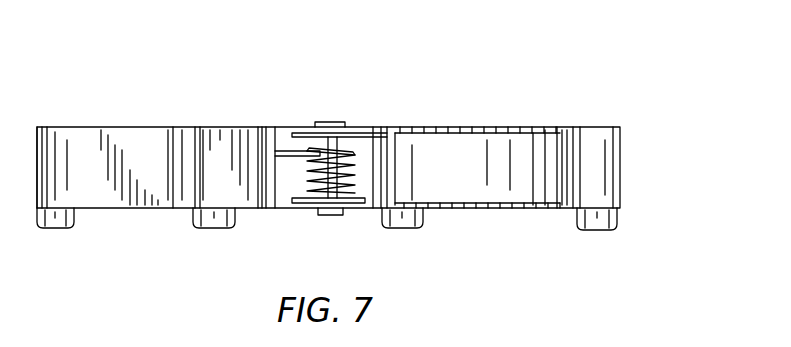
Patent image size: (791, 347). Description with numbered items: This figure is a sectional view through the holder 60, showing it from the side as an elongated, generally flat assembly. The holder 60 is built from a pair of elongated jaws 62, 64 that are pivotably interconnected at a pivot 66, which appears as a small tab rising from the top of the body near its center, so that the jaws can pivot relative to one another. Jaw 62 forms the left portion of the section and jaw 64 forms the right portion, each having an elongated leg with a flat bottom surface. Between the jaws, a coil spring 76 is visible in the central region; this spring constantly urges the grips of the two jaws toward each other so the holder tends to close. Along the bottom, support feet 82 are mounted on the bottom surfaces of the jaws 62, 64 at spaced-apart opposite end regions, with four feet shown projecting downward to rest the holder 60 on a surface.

The holder 60 is at (470, 100).
The jaw 62 is at (130, 150).
The jaw 64 is at (598, 145).
The pivot 66 is at (337, 122).
The coil spring 76 is at (329, 215).
The support feet 82 is at (47, 229).